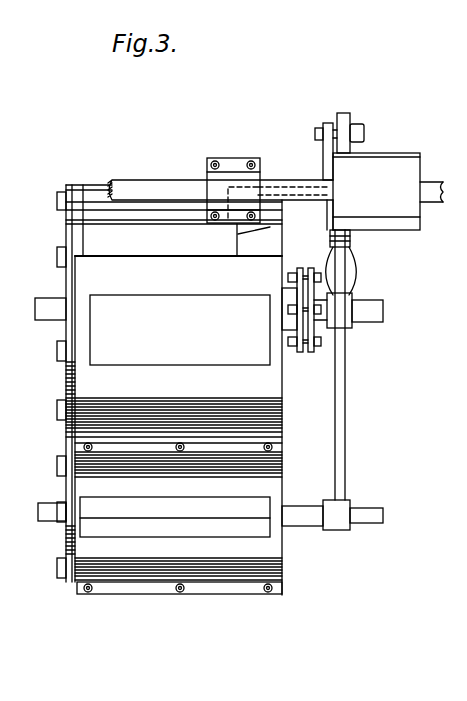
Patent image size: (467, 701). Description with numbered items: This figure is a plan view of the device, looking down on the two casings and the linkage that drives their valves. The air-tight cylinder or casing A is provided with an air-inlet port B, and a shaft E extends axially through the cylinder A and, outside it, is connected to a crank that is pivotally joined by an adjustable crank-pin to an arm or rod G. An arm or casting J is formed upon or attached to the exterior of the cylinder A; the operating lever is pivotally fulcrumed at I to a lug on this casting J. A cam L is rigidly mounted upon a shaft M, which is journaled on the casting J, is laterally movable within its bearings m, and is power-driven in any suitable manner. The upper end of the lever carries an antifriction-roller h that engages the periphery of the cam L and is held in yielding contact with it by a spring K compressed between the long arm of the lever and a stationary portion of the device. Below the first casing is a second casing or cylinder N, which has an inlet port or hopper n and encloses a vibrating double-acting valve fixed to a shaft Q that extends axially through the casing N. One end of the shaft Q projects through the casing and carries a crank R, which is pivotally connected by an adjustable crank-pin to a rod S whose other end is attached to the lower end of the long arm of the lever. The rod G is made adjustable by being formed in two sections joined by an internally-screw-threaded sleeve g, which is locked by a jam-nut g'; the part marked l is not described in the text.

The air-tight cylinder or casing A is at (174, 220).
The air-inlet port B is at (180, 330).
The shaft M is at (147, 187).
The bearings m is at (228, 176).
The spring K is at (330, 122).
The arm or casting J is at (322, 165).
The antifriction-roller h is at (347, 128).
The fulcrum I is at (316, 133).
The cam L is at (392, 184).
The top plate l is at (348, 158).
The internally-screw-threaded sleeve g is at (317, 235).
The jam-nut g' is at (350, 242).
The arm or rod G is at (343, 270).
The rod S is at (346, 276).
The shaft E is at (368, 312).
The second casing or cylinder N is at (267, 487).
The inlet port or hopper n is at (262, 517).
The crank R is at (340, 520).
The shaft Q is at (384, 515).